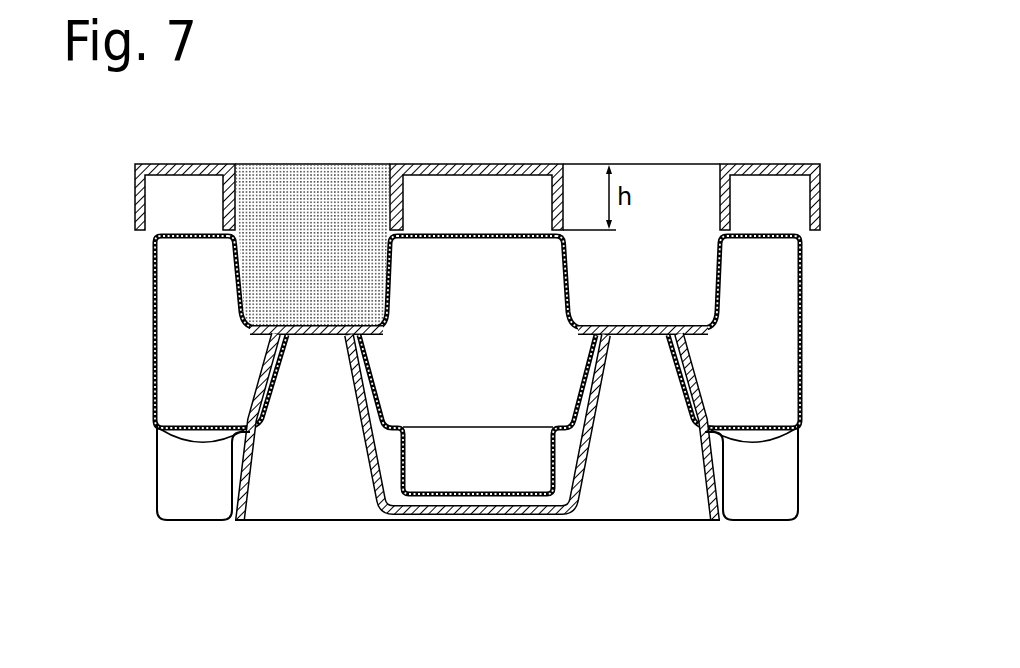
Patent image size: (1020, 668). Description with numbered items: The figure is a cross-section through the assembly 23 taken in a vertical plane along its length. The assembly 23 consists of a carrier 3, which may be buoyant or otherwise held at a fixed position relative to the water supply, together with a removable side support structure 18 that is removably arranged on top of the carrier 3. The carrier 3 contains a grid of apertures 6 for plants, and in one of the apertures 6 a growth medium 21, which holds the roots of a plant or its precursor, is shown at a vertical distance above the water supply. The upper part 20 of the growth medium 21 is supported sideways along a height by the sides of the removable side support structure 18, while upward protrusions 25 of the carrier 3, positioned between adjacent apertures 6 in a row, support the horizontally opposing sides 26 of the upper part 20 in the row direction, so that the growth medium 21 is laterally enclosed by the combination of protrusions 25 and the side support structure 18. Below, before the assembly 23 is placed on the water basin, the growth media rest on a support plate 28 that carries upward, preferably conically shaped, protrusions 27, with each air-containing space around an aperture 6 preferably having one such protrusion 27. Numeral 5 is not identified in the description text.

The carrier 3 is at (177, 500).
The liner tray 5 is at (550, 230).
The apertures 6 is at (309, 303).
The removable side support structure 18 is at (770, 205).
The upper part of the growth medium 20 is at (347, 197).
The growth medium 21 is at (324, 148).
The assembly 23 is at (531, 534).
The upward protrusions 25 is at (672, 205).
The horizontally opposing sides 26 is at (238, 193).
The upward protrusions of the support plate 27 is at (313, 462).
The support plate 28 is at (440, 507).